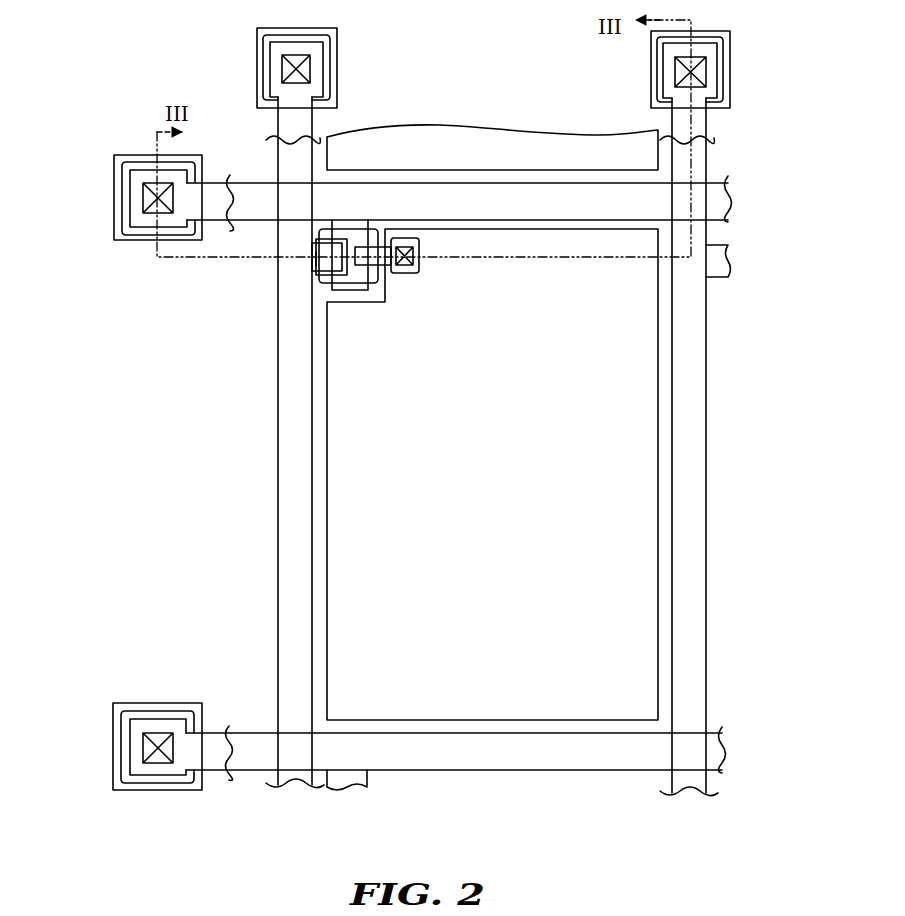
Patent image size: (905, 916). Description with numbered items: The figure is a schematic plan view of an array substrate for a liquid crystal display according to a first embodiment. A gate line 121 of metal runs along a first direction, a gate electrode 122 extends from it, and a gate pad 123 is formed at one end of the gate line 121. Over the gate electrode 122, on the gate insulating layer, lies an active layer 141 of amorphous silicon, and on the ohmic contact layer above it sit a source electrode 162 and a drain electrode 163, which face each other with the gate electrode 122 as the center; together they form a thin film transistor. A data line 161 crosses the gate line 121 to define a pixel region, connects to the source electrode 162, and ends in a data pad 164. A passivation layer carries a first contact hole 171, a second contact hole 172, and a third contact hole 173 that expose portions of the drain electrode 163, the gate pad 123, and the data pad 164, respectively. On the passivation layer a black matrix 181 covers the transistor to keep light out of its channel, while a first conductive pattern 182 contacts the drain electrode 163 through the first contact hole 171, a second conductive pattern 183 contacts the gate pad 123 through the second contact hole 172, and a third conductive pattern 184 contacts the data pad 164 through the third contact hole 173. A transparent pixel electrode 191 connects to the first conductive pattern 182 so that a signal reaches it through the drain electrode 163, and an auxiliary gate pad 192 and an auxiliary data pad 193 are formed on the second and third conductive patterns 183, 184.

The gate line 121 is at (540, 222).
The gate electrode 122 is at (363, 291).
The gate pad 123 is at (148, 228).
The active layer 141 is at (352, 231).
The data line 161 is at (313, 462).
The source electrode 162 is at (342, 283).
The drain electrode 163 is at (373, 274).
The data pad 164 is at (318, 62).
The first contact hole 171 is at (418, 246).
The second contact hole 172 is at (140, 200).
The third contact hole 173 is at (313, 80).
The black matrix 181 is at (316, 259).
The first conductive pattern 182 is at (406, 275).
The second conductive pattern 183 is at (122, 180).
The third conductive pattern 184 is at (269, 72).
The pixel electrode 191 is at (506, 170).
The auxiliary gate pad 192 is at (183, 241).
The auxiliary data pad 193 is at (334, 35).